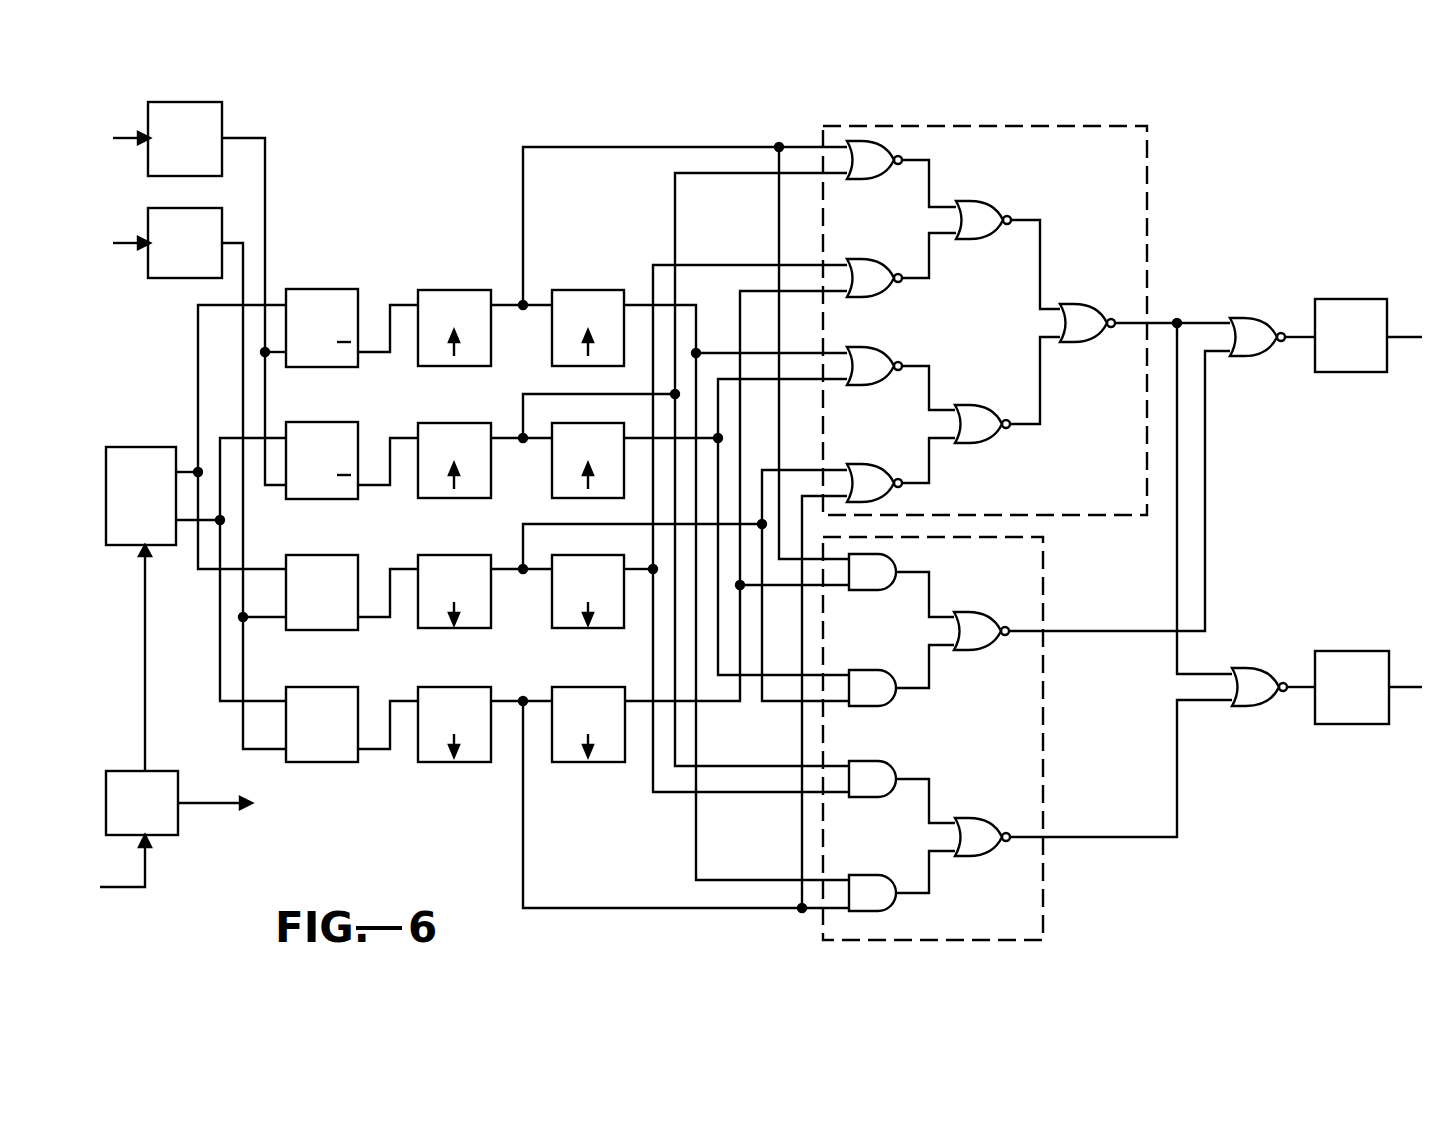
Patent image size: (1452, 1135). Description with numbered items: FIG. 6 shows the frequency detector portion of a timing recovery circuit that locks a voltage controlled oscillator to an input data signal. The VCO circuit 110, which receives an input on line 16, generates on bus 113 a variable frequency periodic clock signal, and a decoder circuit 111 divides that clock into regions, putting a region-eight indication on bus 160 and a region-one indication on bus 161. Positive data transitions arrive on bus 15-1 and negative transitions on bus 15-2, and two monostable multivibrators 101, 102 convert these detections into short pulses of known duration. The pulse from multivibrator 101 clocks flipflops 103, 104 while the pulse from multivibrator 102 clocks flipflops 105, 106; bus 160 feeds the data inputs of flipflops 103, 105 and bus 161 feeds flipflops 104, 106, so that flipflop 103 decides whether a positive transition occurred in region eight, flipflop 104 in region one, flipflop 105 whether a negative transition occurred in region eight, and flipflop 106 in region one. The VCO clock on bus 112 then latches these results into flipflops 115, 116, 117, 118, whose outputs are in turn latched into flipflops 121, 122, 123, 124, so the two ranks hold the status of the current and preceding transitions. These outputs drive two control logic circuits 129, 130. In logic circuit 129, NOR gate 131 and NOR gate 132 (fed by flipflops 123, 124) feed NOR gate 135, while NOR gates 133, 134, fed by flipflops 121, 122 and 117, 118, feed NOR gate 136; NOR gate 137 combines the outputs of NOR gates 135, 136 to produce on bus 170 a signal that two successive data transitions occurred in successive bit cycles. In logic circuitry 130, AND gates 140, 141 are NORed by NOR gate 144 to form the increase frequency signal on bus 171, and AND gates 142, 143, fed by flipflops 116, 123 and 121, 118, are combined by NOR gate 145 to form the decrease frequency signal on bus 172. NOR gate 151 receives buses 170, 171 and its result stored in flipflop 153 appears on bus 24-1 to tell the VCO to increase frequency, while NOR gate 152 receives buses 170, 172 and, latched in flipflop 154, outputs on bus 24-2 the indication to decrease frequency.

The bus 15-1 is at (125, 138).
The bus 15-2 is at (127, 243).
The VCO control input 16 is at (122, 890).
The bus 24-1 is at (1404, 336).
The bus 24-2 is at (1412, 690).
The monostable multivibrator 101 is at (218, 110).
The monostable multivibrator 102 is at (203, 225).
The flipflop 103 is at (318, 302).
The flipflop 104 is at (318, 435).
The flipflop 105 is at (318, 567).
The flipflop 106 is at (318, 699).
The VCO circuit 110 is at (158, 778).
The decoder circuit 111 is at (120, 452).
The bus 112 is at (220, 808).
The bus 113 is at (147, 680).
The flipflop 115 is at (448, 300).
The flipflop 116 is at (462, 434).
The flipflop 117 is at (462, 566).
The flipflop 118 is at (462, 698).
The flipflop 121 is at (580, 300).
The flipflop 122 is at (580, 434).
The flipflop 123 is at (580, 566).
The flipflop 124 is at (580, 698).
The control logic circuit 129 is at (1150, 205).
The control logic circuit 130 is at (1044, 893).
The NOR gate 131 is at (872, 182).
The NOR gate 132 is at (862, 270).
The NOR gate 133 is at (868, 358).
The NOR gate 134 is at (862, 486).
The NOR gate 135 is at (986, 215).
The NOR gate 136 is at (968, 416).
The NOR gate 137 is at (1082, 312).
The AND gate 140 is at (882, 592).
The AND gate 141 is at (880, 672).
The AND gate 142 is at (862, 768).
The AND gate 143 is at (886, 880).
The NOR gate 144 is at (970, 620).
The NOR gate 145 is at (990, 818).
The NOR gate 151 is at (1240, 330).
The NOR gate 152 is at (1252, 674).
The flipflop 153 is at (1330, 374).
The flipflop 154 is at (1368, 660).
The bus 160 is at (190, 470).
The bus 161 is at (194, 524).
The bus 170 is at (1162, 318).
The bus 171 is at (1118, 633).
The bus 172 is at (1122, 838).